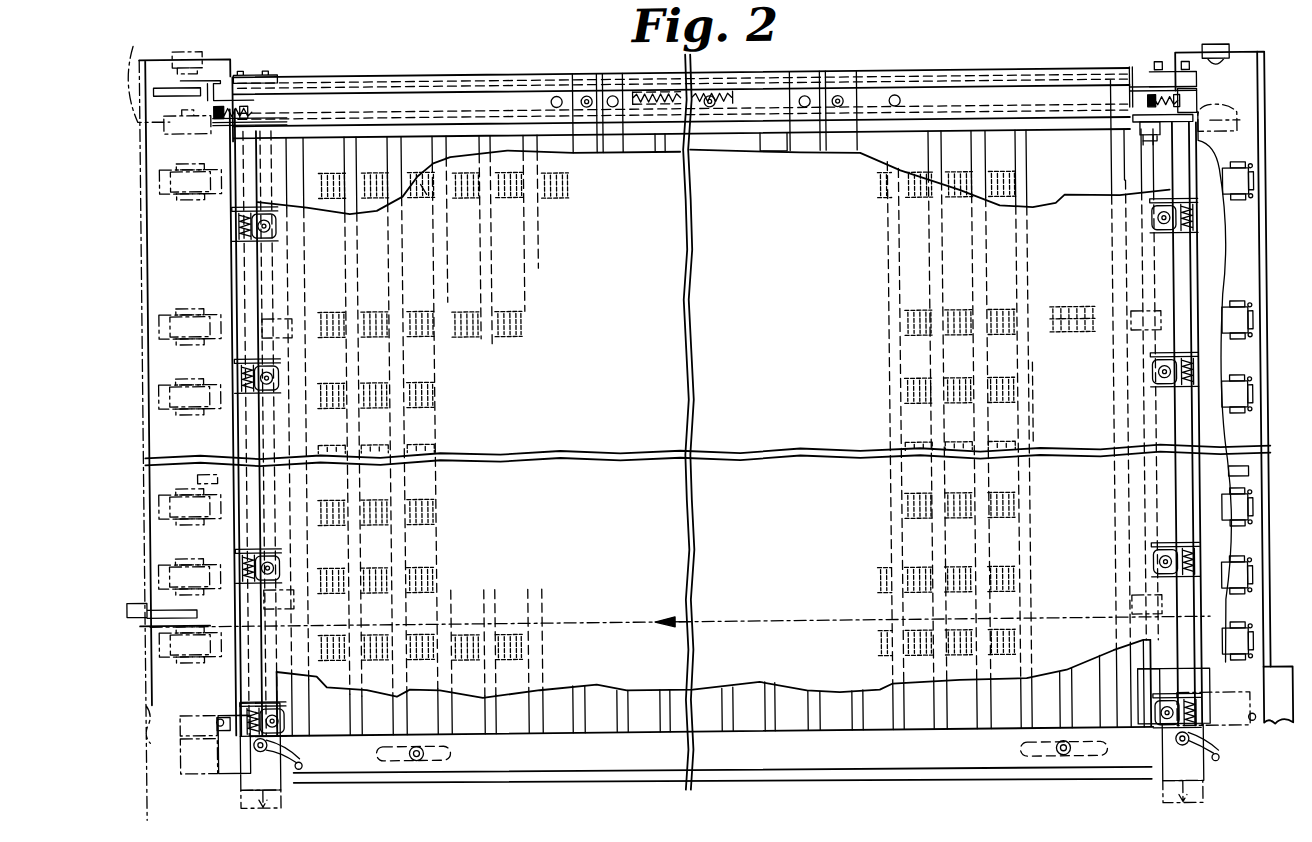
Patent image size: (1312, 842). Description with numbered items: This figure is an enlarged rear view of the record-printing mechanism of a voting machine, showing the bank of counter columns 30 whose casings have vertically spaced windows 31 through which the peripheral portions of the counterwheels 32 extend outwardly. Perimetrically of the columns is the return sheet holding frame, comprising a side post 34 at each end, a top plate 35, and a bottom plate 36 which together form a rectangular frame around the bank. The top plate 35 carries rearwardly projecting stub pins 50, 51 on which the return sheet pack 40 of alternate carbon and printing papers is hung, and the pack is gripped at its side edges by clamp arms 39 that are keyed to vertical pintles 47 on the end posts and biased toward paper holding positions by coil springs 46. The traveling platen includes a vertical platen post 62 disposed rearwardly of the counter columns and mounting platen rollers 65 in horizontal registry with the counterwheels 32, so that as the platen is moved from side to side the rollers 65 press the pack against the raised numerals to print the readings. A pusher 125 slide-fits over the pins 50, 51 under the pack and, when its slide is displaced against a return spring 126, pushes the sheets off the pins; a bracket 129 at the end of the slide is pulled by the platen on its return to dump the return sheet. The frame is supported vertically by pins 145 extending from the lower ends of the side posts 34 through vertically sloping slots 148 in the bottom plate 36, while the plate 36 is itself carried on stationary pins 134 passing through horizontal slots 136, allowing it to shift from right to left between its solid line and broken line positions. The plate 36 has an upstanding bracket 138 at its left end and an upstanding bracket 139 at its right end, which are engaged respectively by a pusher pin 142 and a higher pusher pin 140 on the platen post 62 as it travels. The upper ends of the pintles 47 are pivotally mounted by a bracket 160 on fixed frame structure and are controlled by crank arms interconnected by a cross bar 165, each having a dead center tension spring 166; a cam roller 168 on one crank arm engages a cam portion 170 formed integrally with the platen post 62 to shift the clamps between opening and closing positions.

The counter columns 30 is at (336, 192).
The windows 31 is at (426, 182).
The counterwheels 32 is at (417, 197).
The side post 34 is at (236, 278).
The top plate 35 is at (294, 84).
The bottom plate 36 is at (1229, 782).
The clamp arms 39 is at (254, 212).
The return sheet pack 40 is at (458, 158).
The coil springs 46 is at (244, 226).
The pintles 47 is at (241, 242).
The stub pins 50 is at (560, 95).
The stub pins 51 is at (590, 95).
The platen post 62 is at (158, 423).
The platen rollers 65 is at (211, 123).
The pusher 125 is at (436, 73).
The return spring 126 is at (713, 96).
The bracket 129 is at (1147, 78).
The pins 134 is at (413, 760).
The horizontal slots 136 is at (451, 752).
The upstanding bracket 138 is at (224, 771).
The upstanding bracket 139 is at (1137, 689).
The pusher pin 140 is at (175, 713).
The pusher pin 142 is at (214, 721).
The pins 145 is at (265, 741).
The slots 148 is at (300, 763).
The bracket 160 is at (1274, 730).
The cross bar 165 is at (1131, 76).
The dead center tension spring 166 is at (218, 106).
The cam roller 168 is at (1140, 133).
The cam portion 170 is at (1269, 110).